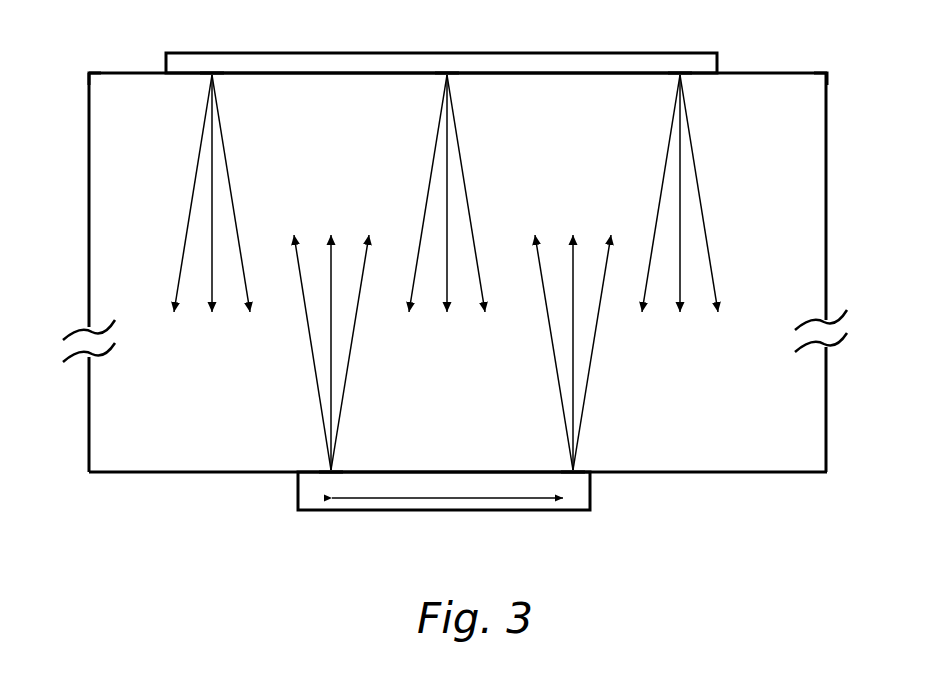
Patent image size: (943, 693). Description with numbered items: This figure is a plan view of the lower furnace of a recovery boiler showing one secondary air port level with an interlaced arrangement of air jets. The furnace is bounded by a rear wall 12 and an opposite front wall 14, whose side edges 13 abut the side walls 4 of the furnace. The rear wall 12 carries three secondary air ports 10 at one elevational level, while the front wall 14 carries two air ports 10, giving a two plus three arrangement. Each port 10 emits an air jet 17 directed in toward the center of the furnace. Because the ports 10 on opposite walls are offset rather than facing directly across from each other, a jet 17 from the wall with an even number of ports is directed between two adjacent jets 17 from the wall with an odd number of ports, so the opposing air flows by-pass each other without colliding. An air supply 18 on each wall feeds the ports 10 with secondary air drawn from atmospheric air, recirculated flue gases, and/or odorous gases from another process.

The side walls 4 is at (89, 184).
The secondary air ports 10 is at (216, 77).
The rear wall 12 is at (790, 72).
The side edges 13 is at (89, 73).
The front wall 14 is at (620, 474).
The air jets 17 is at (218, 204).
The air supply 18 is at (166, 73).